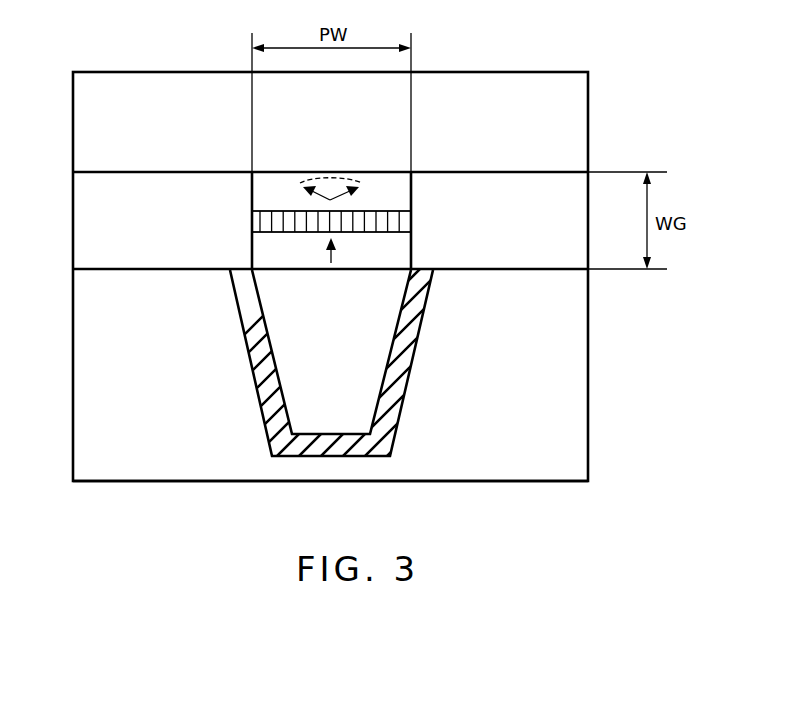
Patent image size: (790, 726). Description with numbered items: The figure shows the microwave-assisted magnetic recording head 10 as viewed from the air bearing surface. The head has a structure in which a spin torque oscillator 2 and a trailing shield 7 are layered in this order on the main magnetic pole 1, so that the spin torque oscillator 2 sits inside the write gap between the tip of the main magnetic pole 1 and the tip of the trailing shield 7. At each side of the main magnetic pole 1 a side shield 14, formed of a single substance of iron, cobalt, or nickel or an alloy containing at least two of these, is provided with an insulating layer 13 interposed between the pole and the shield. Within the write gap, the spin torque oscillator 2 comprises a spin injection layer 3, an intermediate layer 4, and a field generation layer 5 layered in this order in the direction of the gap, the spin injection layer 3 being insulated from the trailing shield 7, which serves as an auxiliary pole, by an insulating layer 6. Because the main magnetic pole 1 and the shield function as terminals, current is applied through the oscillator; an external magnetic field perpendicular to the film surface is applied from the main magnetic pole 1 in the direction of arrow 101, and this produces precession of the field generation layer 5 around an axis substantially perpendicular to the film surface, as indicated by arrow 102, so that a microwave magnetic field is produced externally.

The main magnetic pole 1 is at (316, 418).
The spin torque oscillator 2 is at (247, 176).
The spin injection layer (SIL) 3 is at (415, 250).
The intermediate layer 4 is at (415, 221).
The field generation layer (FGL) 5 is at (415, 191).
The insulating layer 6 is at (578, 232).
The trailing shield 7 is at (578, 113).
The microwave-assisted magnetic recording head 10 is at (645, 66).
The insulating layer 13 is at (357, 433).
The side shield 14 is at (578, 392).
The arrow 101 is at (325, 257).
The arrow 102 is at (330, 199).